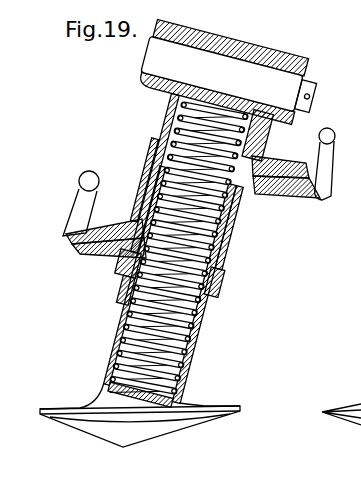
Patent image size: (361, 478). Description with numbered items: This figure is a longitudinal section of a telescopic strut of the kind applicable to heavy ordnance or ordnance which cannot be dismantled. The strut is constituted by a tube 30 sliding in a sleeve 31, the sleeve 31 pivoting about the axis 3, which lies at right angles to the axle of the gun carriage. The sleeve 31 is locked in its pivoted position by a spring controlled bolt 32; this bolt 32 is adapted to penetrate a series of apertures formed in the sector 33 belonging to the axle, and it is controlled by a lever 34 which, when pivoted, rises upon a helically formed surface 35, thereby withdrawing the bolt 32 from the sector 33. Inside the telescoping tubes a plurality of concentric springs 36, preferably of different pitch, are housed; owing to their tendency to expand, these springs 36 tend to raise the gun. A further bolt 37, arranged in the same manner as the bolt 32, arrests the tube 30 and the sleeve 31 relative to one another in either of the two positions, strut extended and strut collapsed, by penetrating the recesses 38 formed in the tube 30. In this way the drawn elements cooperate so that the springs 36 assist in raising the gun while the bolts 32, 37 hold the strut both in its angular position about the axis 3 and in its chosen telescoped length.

The axis 3 is at (175, 64).
The tube 30 is at (106, 357).
The sleeve 31 is at (164, 110).
The spring controlled bolt 32 is at (264, 160).
The sector 33 is at (317, 101).
The lever 34 is at (322, 167).
The helically formed surface 35 is at (307, 197).
The concentric springs 36 is at (227, 271).
The bolt 37 is at (115, 262).
The recesses 38 is at (97, 303).